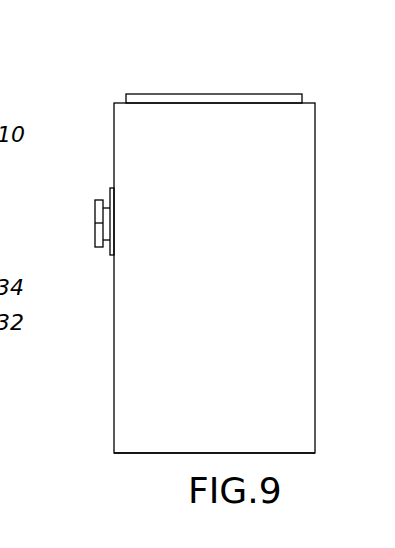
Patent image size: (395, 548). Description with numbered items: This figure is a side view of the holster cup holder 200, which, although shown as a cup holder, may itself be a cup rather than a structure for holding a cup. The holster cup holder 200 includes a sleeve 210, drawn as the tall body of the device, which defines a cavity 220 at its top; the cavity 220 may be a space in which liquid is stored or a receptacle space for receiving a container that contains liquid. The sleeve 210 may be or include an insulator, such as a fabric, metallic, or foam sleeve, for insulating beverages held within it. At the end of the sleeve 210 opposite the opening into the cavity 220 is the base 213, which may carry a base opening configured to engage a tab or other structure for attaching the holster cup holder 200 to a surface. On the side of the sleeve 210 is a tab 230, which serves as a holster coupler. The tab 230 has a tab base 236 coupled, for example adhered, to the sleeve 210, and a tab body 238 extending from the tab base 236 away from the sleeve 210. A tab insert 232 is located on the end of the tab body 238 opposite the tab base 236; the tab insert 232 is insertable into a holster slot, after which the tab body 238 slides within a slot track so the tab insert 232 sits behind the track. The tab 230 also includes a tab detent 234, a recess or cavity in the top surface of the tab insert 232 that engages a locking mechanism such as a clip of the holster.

The holster cup holder 200 is at (189, 264).
The sleeve 210 is at (284, 166).
The base 213 is at (288, 453).
The cavity 220 is at (236, 91).
The tab 230 is at (99, 253).
The tab insert 232 is at (93, 217).
The tab detent 234 is at (88, 224).
The tab base 236 is at (112, 188).
The tab body 238 is at (106, 247).